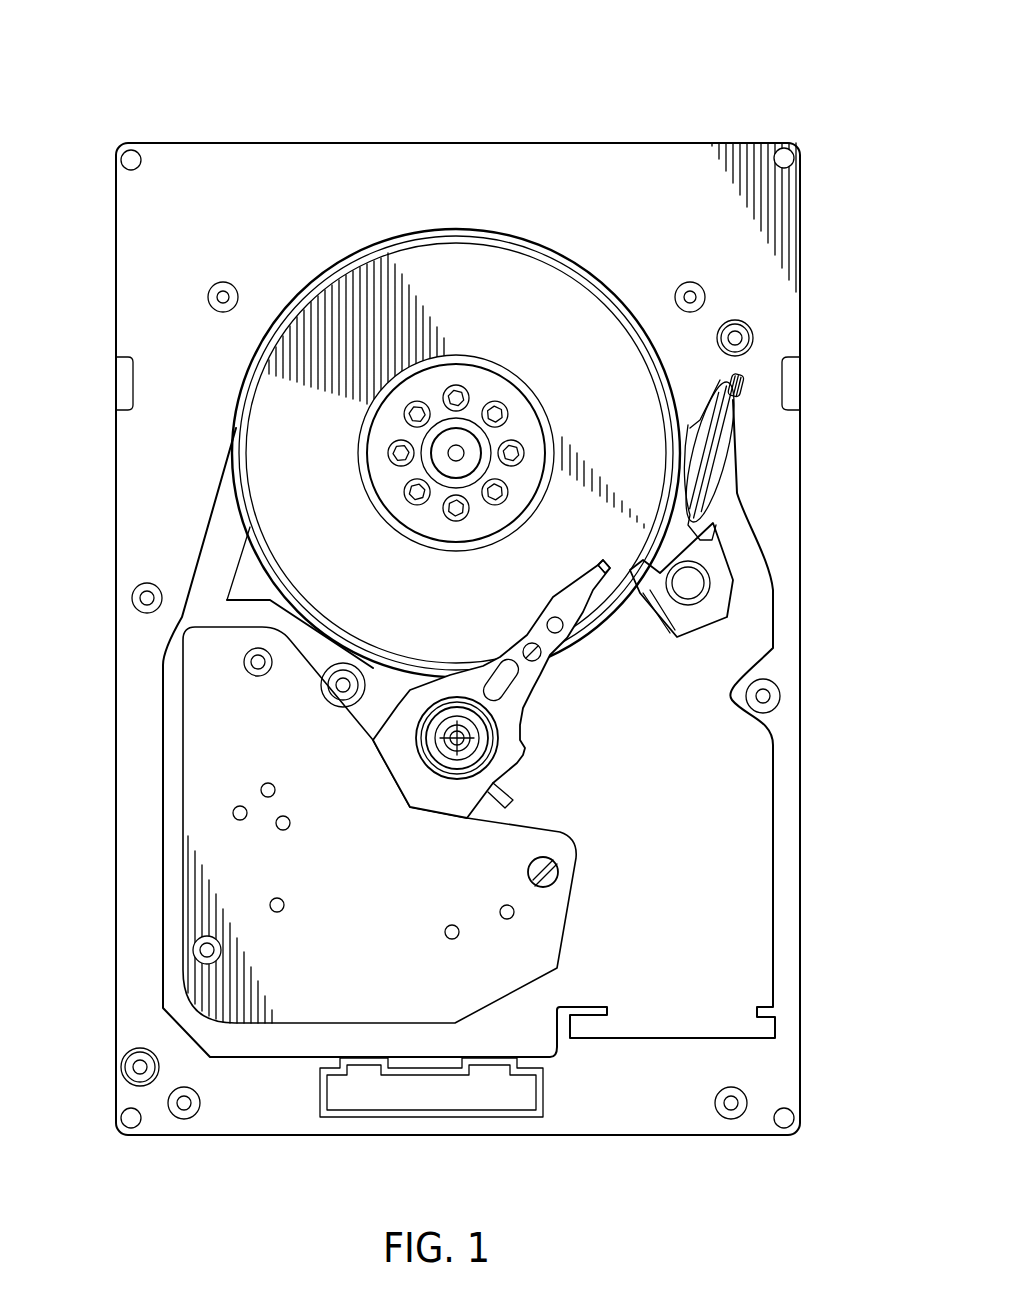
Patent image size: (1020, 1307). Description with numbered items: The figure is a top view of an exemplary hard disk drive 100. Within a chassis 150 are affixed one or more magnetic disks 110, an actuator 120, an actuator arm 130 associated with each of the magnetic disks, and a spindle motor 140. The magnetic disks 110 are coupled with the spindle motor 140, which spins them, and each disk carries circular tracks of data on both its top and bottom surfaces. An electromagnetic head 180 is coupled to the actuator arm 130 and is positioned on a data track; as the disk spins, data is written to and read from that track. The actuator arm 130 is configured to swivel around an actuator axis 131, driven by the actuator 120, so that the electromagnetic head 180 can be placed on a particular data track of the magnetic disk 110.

The hard disk drive 100 is at (652, 62).
The chassis 150 is at (238, 143).
The magnetic disk 110 is at (545, 278).
The spindle motor 140 is at (448, 458).
The electromagnetic head 180 is at (605, 560).
The actuator arm 130 is at (543, 633).
The actuator axis 131 is at (470, 747).
The actuator 120 is at (553, 922).